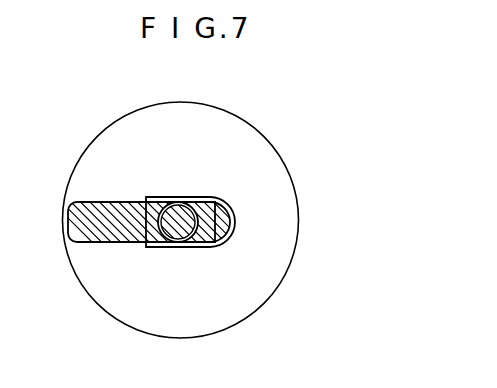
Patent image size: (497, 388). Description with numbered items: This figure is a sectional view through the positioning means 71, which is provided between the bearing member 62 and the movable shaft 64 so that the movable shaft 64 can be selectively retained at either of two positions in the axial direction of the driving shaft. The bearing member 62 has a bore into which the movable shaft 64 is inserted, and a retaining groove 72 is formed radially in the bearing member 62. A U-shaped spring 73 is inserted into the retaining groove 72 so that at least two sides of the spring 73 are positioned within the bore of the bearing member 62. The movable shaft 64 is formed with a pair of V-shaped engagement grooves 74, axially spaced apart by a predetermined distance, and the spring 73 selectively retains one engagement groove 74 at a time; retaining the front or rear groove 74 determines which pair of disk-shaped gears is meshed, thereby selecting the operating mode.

The bearing member 62 is at (260, 150).
The movable shaft 64 is at (175, 228).
The positioning means 71 is at (347, 190).
The retaining groove 72 is at (289, 197).
The U-shaped spring 73 is at (236, 222).
The V-shaped engagement grooves 74 is at (231, 241).